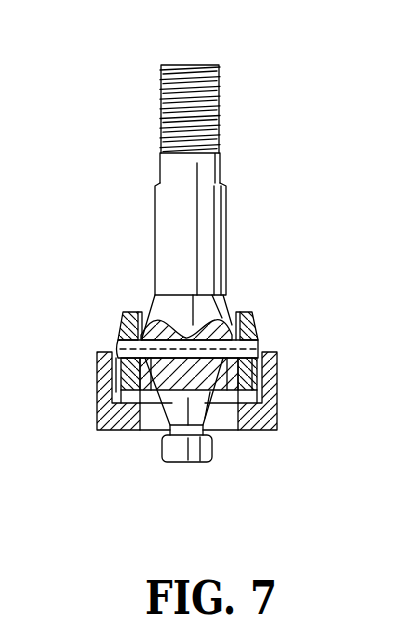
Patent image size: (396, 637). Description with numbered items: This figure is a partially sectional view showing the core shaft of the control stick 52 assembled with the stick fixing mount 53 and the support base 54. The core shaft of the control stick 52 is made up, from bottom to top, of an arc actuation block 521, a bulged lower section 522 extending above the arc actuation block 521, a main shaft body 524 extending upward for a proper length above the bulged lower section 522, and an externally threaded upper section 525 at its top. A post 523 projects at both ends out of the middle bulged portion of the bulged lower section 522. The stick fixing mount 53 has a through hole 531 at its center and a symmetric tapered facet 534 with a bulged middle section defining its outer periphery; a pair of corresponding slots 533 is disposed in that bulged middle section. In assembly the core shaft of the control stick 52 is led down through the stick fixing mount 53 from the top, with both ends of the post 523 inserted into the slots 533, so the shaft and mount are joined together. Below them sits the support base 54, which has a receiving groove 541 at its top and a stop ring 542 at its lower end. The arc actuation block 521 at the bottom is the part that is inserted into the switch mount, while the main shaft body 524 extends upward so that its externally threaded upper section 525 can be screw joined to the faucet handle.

The core shaft of the control stick 52 is at (134, 149).
The arc actuation block 521 is at (182, 460).
The bulged lower section 522 is at (150, 305).
The post 523 is at (253, 333).
The main shaft body 524 is at (215, 205).
The externally threaded upper section 525 is at (218, 75).
The stick fixing mount 53 is at (104, 340).
The through hole 531 is at (97, 380).
The slots 533 is at (258, 342).
The symmetric tapered facet 534 is at (115, 345).
The support base 54 is at (292, 419).
The receiving groove 541 is at (256, 375).
The stop ring 542 is at (223, 423).